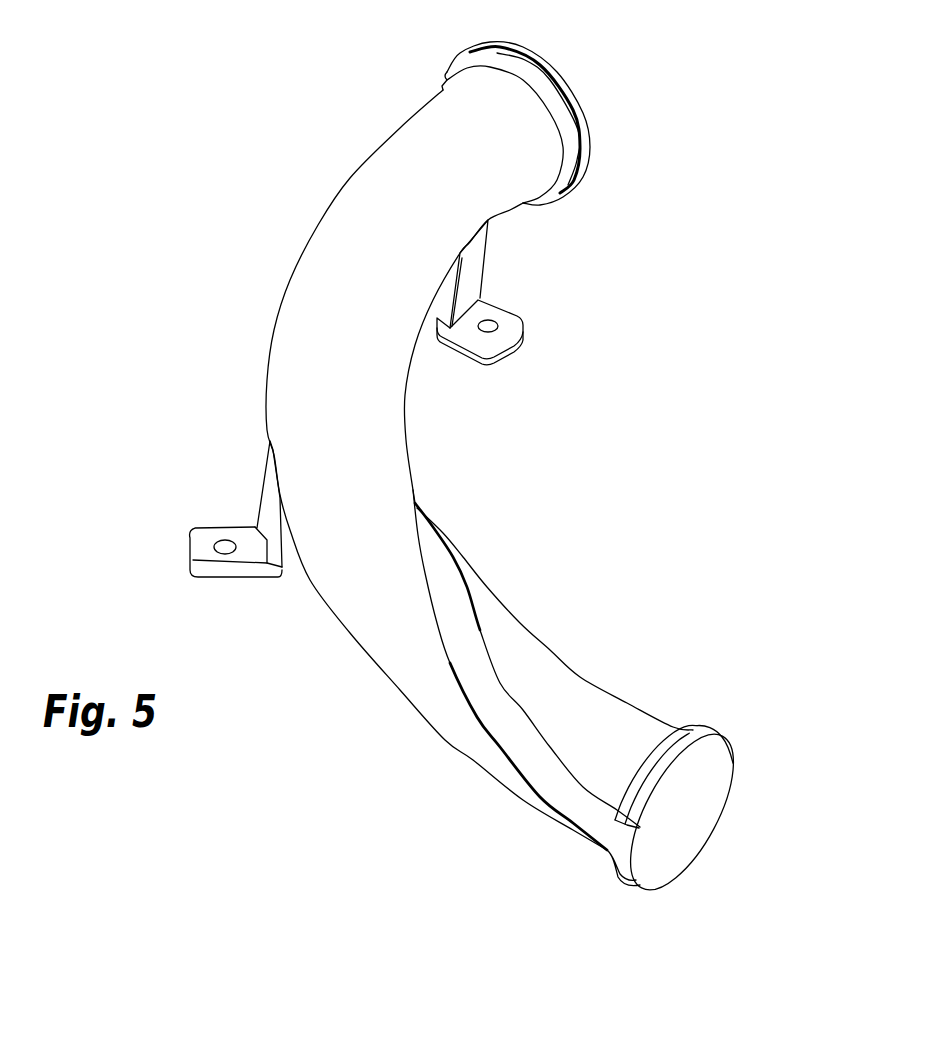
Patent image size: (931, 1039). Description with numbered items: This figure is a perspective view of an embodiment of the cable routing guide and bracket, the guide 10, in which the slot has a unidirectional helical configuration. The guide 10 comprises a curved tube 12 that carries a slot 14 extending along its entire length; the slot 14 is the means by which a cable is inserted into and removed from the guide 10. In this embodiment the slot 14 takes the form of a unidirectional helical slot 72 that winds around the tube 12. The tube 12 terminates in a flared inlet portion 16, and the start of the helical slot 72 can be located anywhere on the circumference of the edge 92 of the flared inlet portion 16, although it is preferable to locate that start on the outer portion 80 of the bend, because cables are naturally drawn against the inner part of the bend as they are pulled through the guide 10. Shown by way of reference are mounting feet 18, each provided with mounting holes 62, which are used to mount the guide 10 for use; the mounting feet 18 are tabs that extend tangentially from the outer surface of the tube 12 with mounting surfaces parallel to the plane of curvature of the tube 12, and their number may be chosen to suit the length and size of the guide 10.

The guide 10 is at (452, 515).
The tube 12 is at (445, 107).
The slot 14 is at (503, 677).
The flared inlet portion 16 is at (683, 828).
The mounting feet 18 is at (230, 532).
The mounting holes 62 is at (220, 552).
The unidirectional helical slot 72 is at (435, 562).
The outer portion 80 is at (328, 293).
The edge 92 is at (620, 880).